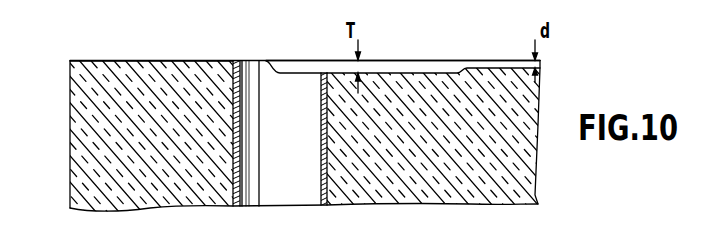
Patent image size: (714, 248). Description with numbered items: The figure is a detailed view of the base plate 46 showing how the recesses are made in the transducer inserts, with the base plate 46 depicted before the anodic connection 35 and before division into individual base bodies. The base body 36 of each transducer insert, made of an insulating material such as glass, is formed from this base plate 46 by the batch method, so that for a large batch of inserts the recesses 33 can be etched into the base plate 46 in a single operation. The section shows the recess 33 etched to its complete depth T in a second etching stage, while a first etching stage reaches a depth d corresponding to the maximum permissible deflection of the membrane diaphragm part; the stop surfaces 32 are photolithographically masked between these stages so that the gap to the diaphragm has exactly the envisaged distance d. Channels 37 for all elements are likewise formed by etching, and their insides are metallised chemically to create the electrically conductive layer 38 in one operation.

The stop surfaces 32 is at (501, 67).
The recesses 33 is at (415, 72).
The anodic connection 35 is at (122, 60).
The base body 36 is at (98, 102).
The channels 37 is at (325, 183).
The electrically conductive layer 38 is at (240, 83).
The base plate 46 is at (518, 180).